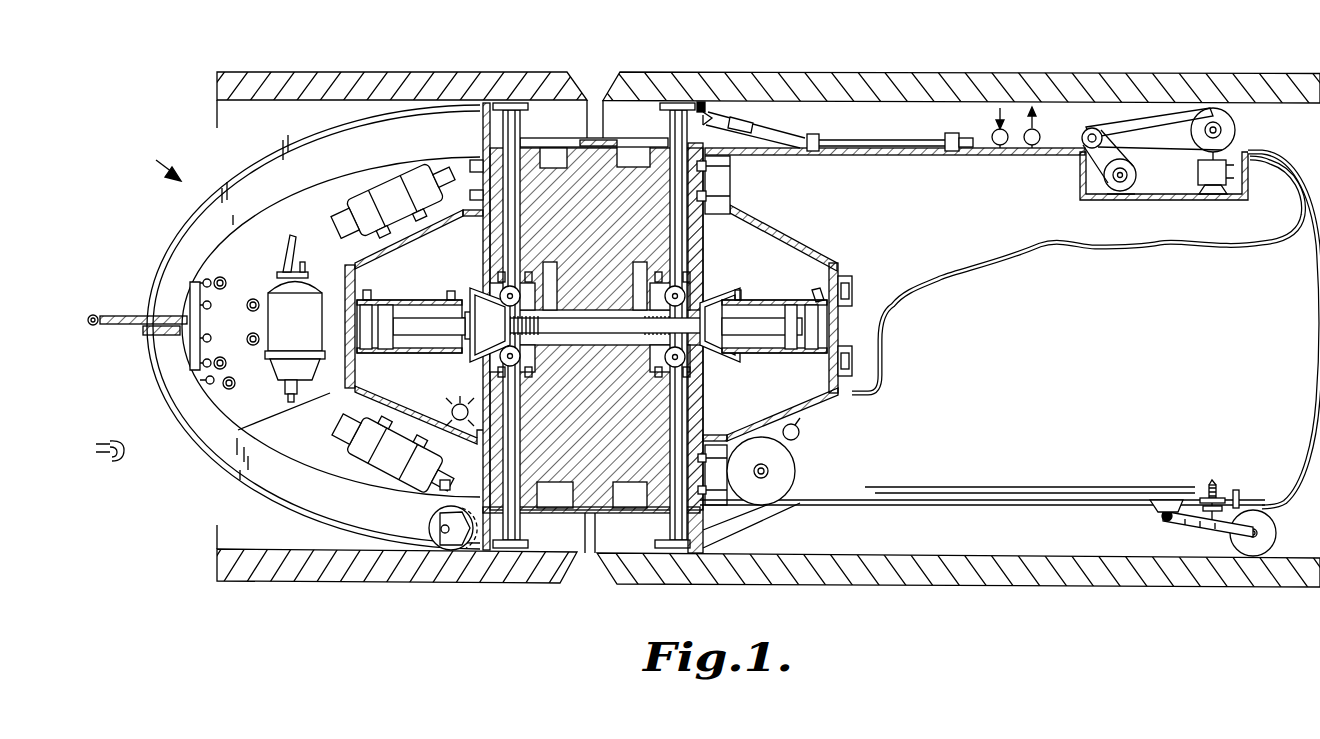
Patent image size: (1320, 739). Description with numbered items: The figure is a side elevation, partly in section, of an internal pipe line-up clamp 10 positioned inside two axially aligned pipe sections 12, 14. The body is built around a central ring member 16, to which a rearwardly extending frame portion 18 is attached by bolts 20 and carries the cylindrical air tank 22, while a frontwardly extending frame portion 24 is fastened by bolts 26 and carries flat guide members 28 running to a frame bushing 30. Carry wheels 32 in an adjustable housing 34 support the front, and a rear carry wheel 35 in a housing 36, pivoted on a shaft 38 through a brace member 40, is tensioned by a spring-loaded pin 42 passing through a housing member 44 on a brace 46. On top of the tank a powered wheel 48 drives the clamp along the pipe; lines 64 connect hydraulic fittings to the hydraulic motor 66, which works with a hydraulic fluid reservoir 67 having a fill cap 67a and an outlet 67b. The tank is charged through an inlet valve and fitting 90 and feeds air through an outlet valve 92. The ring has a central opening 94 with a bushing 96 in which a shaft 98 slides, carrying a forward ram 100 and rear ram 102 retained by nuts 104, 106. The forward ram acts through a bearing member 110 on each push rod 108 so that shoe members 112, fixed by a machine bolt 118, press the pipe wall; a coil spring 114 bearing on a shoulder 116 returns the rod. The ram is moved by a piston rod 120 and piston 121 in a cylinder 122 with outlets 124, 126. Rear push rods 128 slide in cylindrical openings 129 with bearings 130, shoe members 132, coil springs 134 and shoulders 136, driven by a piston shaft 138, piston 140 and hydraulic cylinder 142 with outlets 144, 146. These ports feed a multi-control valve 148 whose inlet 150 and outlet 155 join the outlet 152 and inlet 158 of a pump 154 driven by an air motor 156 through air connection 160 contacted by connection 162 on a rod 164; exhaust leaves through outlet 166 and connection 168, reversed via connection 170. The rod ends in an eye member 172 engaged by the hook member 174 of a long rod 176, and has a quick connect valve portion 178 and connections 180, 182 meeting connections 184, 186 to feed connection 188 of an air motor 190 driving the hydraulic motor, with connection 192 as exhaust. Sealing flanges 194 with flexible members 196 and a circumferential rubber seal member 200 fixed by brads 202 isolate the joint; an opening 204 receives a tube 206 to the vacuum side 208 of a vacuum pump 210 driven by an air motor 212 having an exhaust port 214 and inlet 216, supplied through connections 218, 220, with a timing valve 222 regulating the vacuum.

The pipe line-up clamp 10 is at (157, 163).
The pipe section 12 is at (930, 72).
The pipe section 14 is at (306, 72).
The ring member 16 is at (553, 158).
The rearwardly extending frame portion 18 is at (790, 258).
The bolts 20 is at (731, 171).
The air tank 22 is at (940, 506).
The frontwardly extending frame portion 24 is at (470, 218).
The bolts 26 is at (481, 170).
The guide members 28 is at (272, 147).
The frame bushing 30 is at (160, 312).
The carry wheels 32 is at (428, 521).
The housing 34 is at (455, 548).
The carry wheel 35 is at (1276, 529).
The housing 36 is at (1205, 531).
The shaft 38 is at (1160, 524).
The brace member 40 is at (1158, 506).
The adjustable tension pin 42 is at (1210, 482).
The housing member 44 is at (1222, 496).
The brace 46 is at (1240, 498).
The wheel 48 is at (1236, 138).
The lines 64 is at (452, 192).
The hydraulic motor 66 is at (398, 192).
The hydraulic fluid reservoir 67 is at (797, 473).
The fill cap 67a is at (766, 475).
The outlet 67b is at (800, 436).
The inlet valve and fitting 90 is at (993, 132).
The outlet valve 92 is at (1040, 134).
The opening 94 is at (605, 313).
The bushing 96 is at (572, 322).
The shaft 98 is at (550, 280).
The forward ram 100 is at (478, 300).
The rear ram 102 is at (706, 300).
The nut 104 is at (482, 412).
The nut 106 is at (716, 355).
The push rod 108 is at (503, 108).
The bearing member 110 is at (522, 356).
The shoe members 112 is at (515, 103).
The coil spring 114 is at (530, 388).
The shoulder 116 is at (520, 362).
The machine bolt 118 is at (470, 338).
The piston rod 120 is at (428, 336).
The piston 121 is at (380, 352).
The cylinder 122 is at (413, 298).
The outlet 124 is at (368, 300).
The outlet 126 is at (450, 299).
The push rods 128 is at (660, 132).
The cylindrical openings 129 is at (625, 240).
The bearings 130 is at (640, 262).
The shoe members 132 is at (675, 103).
The coil springs 134 is at (640, 270).
The shoulder 136 is at (615, 290).
The piston shaft 138 is at (740, 340).
The piston 140 is at (790, 352).
The hydraulic cylinder 142 is at (782, 300).
The outlet 144 is at (738, 292).
The outlet 146 is at (818, 290).
The multi-control valve 148 is at (450, 409).
The inlet 150 is at (388, 432).
The outlet 152 is at (410, 488).
The pump 154 is at (398, 476).
The outlet 155 is at (518, 446).
The air motor 156 is at (362, 462).
The inlet 158 is at (330, 452).
The air connection 160 is at (262, 340).
The air connection 162 is at (203, 363).
The rod 164 is at (195, 316).
The outlet 166 is at (365, 430).
The air connection 168 is at (268, 318).
The air connection 170 is at (209, 309).
The eye member 172 is at (96, 326).
The hook member 174 is at (126, 448).
The long rod 176 is at (97, 456).
The quick connect valve portion 178 is at (108, 326).
The air connection 180 is at (206, 379).
The air connection 182 is at (206, 279).
The air connection 184 is at (211, 338).
The air connection 186 is at (221, 277).
The connection 188 is at (350, 226).
The air motor 190 is at (362, 198).
The air connection 192 is at (336, 210).
The sealing flange 194 is at (605, 516).
The flexible member 196 is at (706, 546).
The circumferential rubber seal member 200 is at (596, 229).
The brads 202 is at (573, 150).
The opening 204 is at (710, 115).
The tube 206 is at (807, 137).
The vacuum side 208 is at (284, 272).
The vacuum pump 210 is at (311, 408).
The air motor 212 is at (305, 392).
The exhaust port 214 is at (306, 267).
The inlet 216 is at (282, 398).
The air connection 218 is at (229, 389).
The air connection 220 is at (213, 400).
The timing valve 222 is at (758, 126).